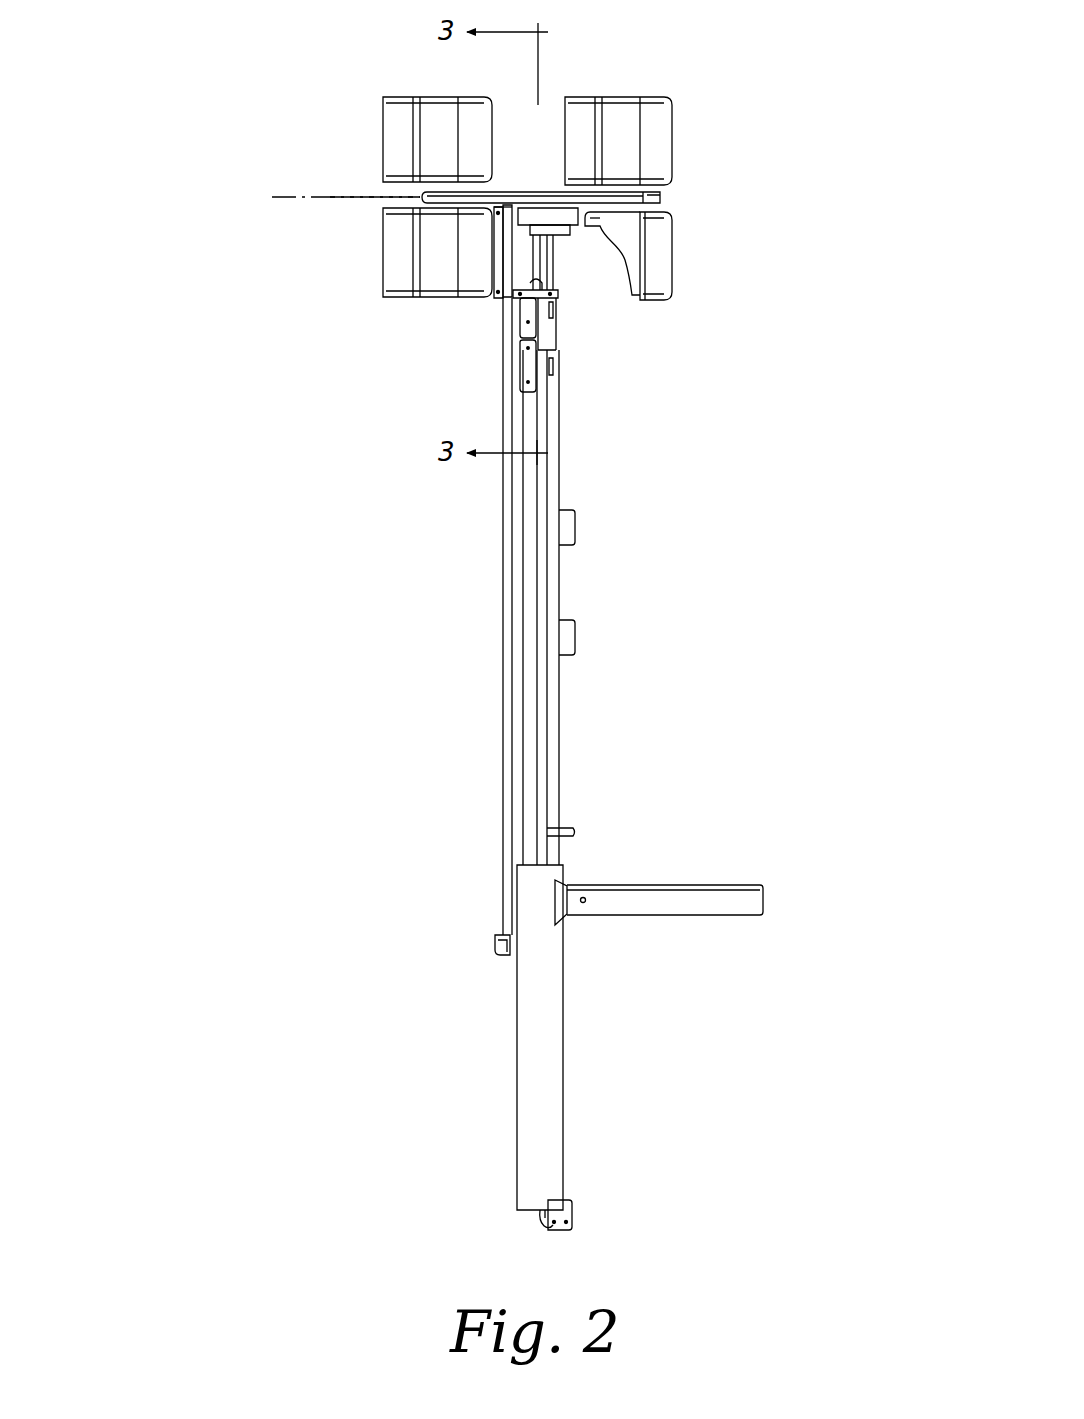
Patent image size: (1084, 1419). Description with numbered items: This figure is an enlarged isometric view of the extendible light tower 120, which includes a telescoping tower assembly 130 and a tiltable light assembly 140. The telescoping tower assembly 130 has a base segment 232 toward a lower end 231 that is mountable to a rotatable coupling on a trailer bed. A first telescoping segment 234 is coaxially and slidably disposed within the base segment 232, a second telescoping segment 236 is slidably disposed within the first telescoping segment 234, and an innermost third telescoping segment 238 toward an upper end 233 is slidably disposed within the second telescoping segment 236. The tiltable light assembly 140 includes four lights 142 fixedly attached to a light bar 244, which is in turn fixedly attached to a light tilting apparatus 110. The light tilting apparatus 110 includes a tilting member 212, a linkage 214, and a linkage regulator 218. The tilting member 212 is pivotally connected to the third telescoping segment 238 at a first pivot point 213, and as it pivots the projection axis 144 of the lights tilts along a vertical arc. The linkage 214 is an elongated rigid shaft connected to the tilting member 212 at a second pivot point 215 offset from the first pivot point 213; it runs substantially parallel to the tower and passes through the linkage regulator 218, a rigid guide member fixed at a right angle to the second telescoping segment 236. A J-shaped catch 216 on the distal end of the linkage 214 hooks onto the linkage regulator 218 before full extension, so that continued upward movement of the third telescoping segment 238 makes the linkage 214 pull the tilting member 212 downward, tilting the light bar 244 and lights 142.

The light tilting apparatus 110 is at (290, 270).
The extendible light tower 120 is at (830, 823).
The telescoping tower assembly 130 is at (435, 740).
The tiltable light assembly 140 is at (205, 178).
The lights 142 is at (395, 136).
The projection axis 144 is at (357, 193).
The tilting member 212 is at (548, 212).
The first pivot point 213 is at (572, 218).
The linkage 214 is at (503, 632).
The second pivot point 215 is at (530, 210).
The catch 216 is at (495, 945).
The linkage regulator 218 is at (500, 300).
The lower end 231 is at (495, 1210).
The base segment 232 is at (562, 1100).
The upper end 233 is at (362, 286).
The first telescoping segment 234 is at (560, 705).
The second telescoping segment 236 is at (560, 338).
The third telescoping segment 238 is at (560, 270).
The light bar 244 is at (660, 200).